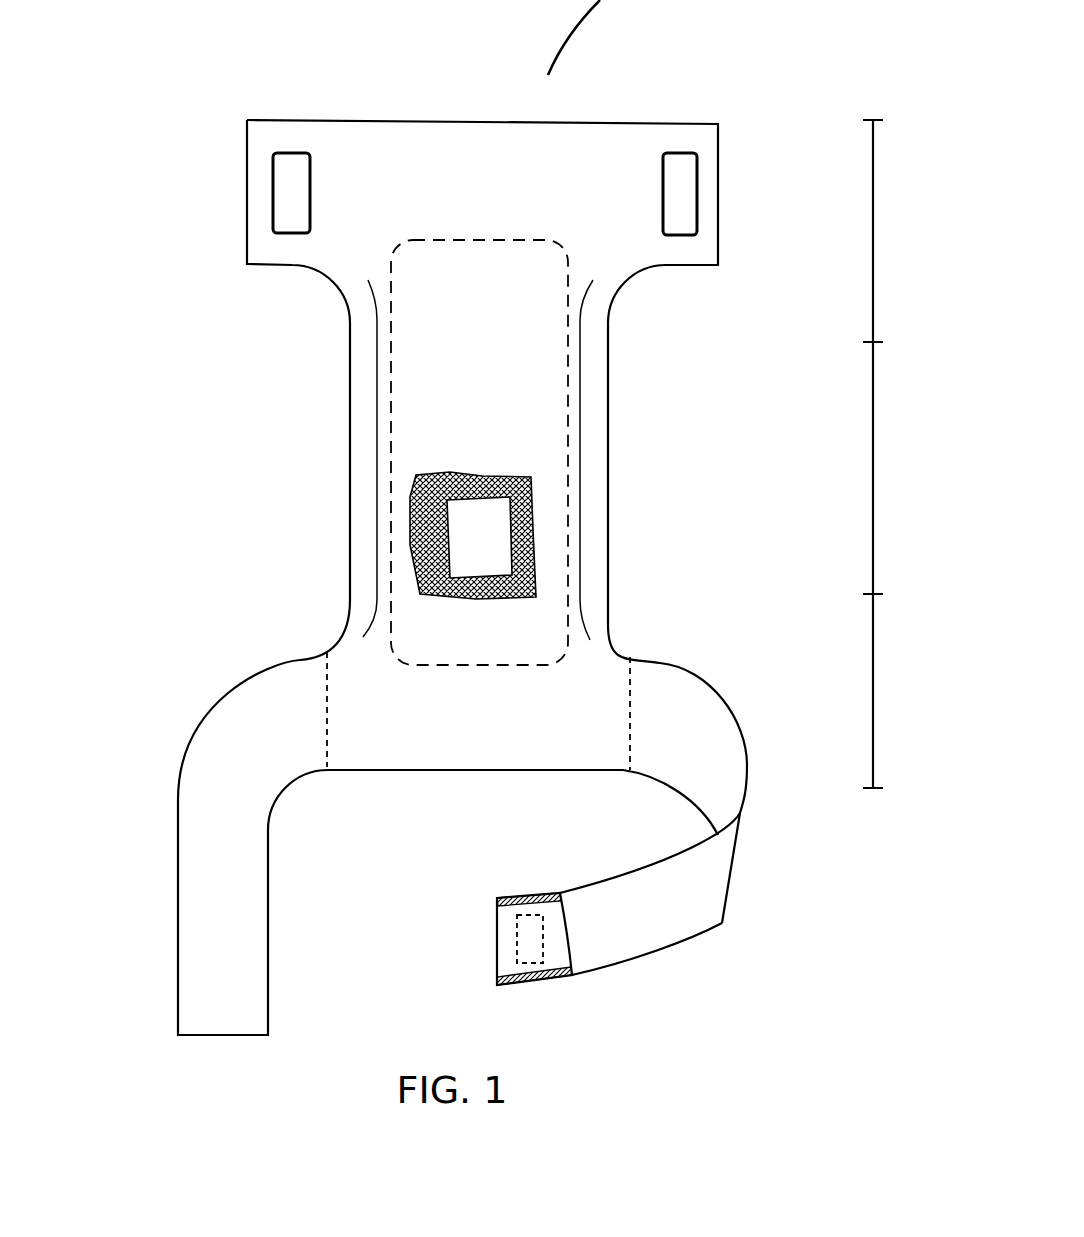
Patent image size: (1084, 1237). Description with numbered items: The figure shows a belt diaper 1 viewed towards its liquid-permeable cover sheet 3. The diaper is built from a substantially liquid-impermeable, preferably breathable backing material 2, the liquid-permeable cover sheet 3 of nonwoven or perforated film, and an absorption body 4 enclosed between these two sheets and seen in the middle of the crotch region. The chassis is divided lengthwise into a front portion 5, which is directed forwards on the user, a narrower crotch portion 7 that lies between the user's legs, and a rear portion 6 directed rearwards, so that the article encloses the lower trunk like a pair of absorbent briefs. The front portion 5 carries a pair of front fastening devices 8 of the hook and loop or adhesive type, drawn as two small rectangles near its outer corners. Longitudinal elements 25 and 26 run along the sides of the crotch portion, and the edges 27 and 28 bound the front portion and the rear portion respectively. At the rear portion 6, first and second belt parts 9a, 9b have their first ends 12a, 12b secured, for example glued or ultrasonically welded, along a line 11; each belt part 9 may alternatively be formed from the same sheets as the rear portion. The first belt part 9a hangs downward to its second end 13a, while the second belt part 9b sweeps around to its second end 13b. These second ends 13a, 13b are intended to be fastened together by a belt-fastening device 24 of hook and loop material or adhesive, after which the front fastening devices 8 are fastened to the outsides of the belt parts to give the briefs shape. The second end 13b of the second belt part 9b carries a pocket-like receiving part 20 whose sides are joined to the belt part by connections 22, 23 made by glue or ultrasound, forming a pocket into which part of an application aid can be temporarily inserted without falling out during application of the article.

The belt diaper 1 is at (462, 577).
The liquid-impermeable backing material 2 is at (493, 533).
The liquid-permeable cover sheet 3 is at (603, 658).
The absorption body 4 is at (530, 496).
The front portion 5 is at (895, 231).
The rear portion 6 is at (895, 691).
The crotch portion 7 is at (610, 408).
The front fastening devices 8 is at (293, 165).
The belt part 9 is at (149, 771).
The first belt part 9a is at (247, 887).
The second belt part 9b is at (645, 935).
The line 11 is at (320, 665).
The first end of first belt part 12a is at (295, 688).
The first end of second belt part 12b is at (653, 705).
The second end of first belt part 13a is at (196, 1022).
The second end of second belt part 13b is at (535, 967).
The receiving part 20 is at (497, 900).
The connection 22 is at (513, 892).
The connection 23 is at (563, 973).
The belt-fastening device 24 is at (505, 985).
The first longitudinal elastic line 25 is at (349, 353).
The second longitudinal elastic line 26 is at (615, 351).
The front waist edge 27 is at (475, 120).
The rear waist edge 28 is at (490, 771).